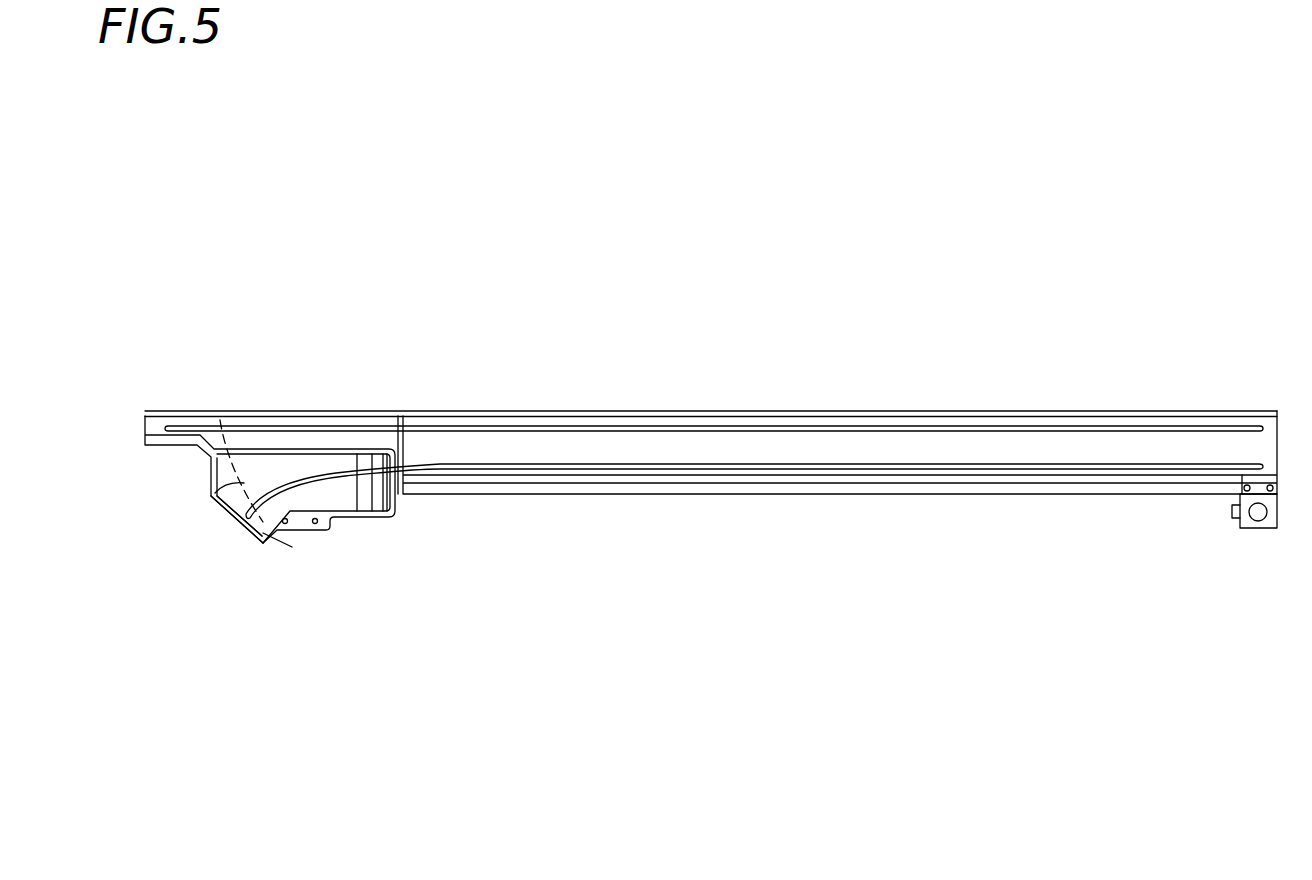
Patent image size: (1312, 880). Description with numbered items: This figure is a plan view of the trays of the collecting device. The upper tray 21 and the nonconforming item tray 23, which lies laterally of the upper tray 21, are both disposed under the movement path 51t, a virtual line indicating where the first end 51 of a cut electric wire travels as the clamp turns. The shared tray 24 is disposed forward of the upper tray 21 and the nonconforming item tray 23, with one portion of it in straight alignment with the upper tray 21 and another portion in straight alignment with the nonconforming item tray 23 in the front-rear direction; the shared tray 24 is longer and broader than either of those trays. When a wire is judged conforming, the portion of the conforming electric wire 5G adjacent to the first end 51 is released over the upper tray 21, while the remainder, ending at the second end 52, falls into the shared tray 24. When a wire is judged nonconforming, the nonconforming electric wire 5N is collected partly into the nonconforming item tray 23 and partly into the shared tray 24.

The upper tray 21 is at (304, 418).
The nonconforming item tray 23 is at (308, 496).
The shared tray 24 is at (867, 445).
The first end 51 is at (168, 412).
The movement path 51t is at (215, 497).
The second end 52 is at (1257, 420).
The conforming electric wire 5G is at (616, 426).
The nonconforming electric wire 5N is at (617, 470).